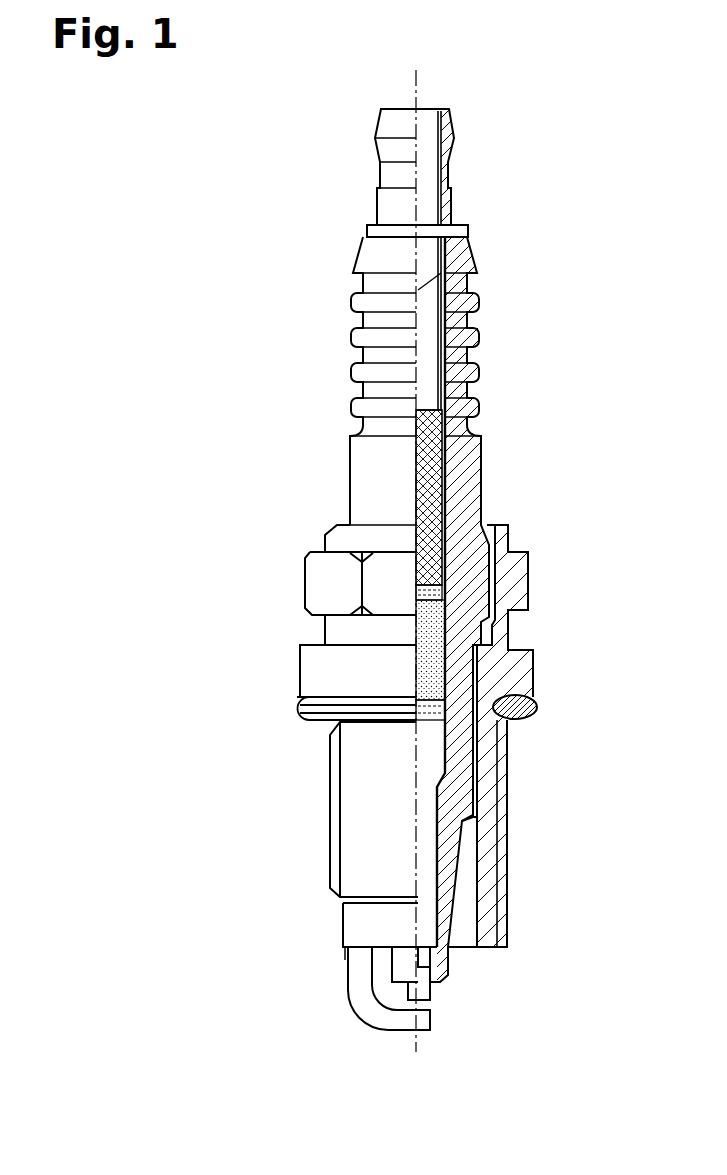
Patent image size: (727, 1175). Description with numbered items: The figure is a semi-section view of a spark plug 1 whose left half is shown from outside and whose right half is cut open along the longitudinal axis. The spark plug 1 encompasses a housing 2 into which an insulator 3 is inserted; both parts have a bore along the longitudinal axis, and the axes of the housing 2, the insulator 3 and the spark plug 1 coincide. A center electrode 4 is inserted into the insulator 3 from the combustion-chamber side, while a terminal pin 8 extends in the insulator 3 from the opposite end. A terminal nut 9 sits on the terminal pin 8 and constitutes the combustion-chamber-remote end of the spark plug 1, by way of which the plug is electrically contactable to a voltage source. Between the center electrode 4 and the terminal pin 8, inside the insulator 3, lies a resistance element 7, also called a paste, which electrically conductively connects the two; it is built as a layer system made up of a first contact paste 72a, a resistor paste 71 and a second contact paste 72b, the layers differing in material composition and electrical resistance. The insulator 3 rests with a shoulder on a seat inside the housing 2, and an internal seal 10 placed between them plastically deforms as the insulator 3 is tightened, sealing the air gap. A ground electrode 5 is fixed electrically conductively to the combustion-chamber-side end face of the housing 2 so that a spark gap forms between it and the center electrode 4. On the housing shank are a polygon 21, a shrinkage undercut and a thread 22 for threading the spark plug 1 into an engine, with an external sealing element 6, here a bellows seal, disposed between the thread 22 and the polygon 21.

The spark plug 1 is at (226, 171).
The housing 2 is at (458, 736).
The polygon 21 is at (528, 582).
The thread 22 is at (507, 780).
The insulator 3 is at (457, 457).
The center electrode 4 is at (425, 989).
The ground electrode 5 is at (425, 1020).
The external sealing element 6 is at (537, 707).
The resistance element 7 is at (423, 582).
The resistor paste 71 is at (435, 668).
The first contact paste 72a is at (437, 623).
The second contact paste 72b is at (427, 713).
The terminal pin 8 is at (440, 305).
The terminal nut 9 is at (443, 202).
The internal seal 10 is at (473, 823).